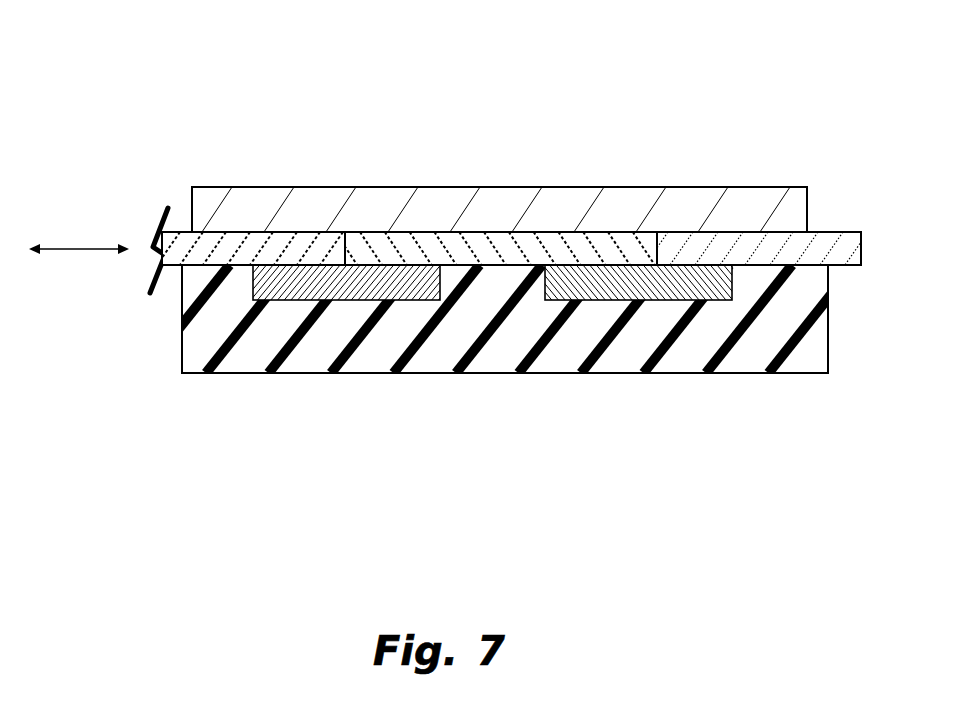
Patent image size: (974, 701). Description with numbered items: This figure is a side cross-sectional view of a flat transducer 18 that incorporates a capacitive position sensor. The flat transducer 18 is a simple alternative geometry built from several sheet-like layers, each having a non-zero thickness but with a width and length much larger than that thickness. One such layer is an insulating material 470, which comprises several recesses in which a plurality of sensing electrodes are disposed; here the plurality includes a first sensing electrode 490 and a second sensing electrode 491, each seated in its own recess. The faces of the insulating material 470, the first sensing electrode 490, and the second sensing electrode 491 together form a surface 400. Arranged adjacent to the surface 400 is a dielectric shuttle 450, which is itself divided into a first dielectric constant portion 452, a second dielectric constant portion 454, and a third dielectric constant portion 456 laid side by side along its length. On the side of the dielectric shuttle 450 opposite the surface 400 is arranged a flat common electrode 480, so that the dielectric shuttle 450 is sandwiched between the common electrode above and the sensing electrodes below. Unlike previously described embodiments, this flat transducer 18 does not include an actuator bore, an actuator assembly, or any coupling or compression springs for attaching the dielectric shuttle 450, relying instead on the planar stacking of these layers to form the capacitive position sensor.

The flat transducer 18 is at (123, 75).
The surface 400 is at (870, 277).
The dielectric shuttle 450 is at (563, 352).
The first dielectric constant portion 452 is at (198, 252).
The second dielectric constant portion 454 is at (467, 250).
The third dielectric constant portion 456 is at (767, 250).
The insulating material 470 is at (283, 327).
The flat common electrode 480 is at (758, 204).
The first sensing electrode 490 is at (378, 288).
The second sensing electrode 491 is at (628, 285).